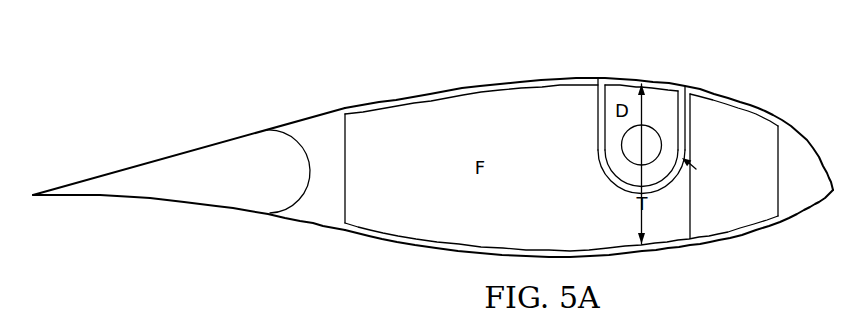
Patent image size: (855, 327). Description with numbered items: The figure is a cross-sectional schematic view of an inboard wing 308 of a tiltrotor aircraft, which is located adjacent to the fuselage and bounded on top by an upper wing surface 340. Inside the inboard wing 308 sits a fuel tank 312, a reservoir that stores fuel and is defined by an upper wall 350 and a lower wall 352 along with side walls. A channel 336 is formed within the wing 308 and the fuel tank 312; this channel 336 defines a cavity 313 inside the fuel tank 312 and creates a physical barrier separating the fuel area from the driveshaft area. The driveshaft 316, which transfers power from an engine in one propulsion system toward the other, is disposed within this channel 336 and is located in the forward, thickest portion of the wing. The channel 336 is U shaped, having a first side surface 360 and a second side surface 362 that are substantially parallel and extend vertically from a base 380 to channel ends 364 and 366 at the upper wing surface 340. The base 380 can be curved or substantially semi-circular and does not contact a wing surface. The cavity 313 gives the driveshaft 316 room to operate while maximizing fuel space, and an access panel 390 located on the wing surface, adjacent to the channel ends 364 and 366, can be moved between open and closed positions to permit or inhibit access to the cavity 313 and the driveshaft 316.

The inboard wing 308 is at (370, 102).
The fuel tank 312 is at (555, 78).
The cavity 313 is at (665, 98).
The driveshaft 316 is at (622, 143).
The channel 336 is at (696, 169).
The upper wing surface 340 is at (435, 90).
The upper wall 350 is at (495, 83).
The lower wall 352 is at (400, 238).
The first side surface 360 is at (641, 130).
The second side surface 362 is at (685, 128).
The channel end 364 is at (602, 77).
The channel end 366 is at (683, 80).
The base 380 is at (620, 185).
The access panel 390 is at (620, 85).